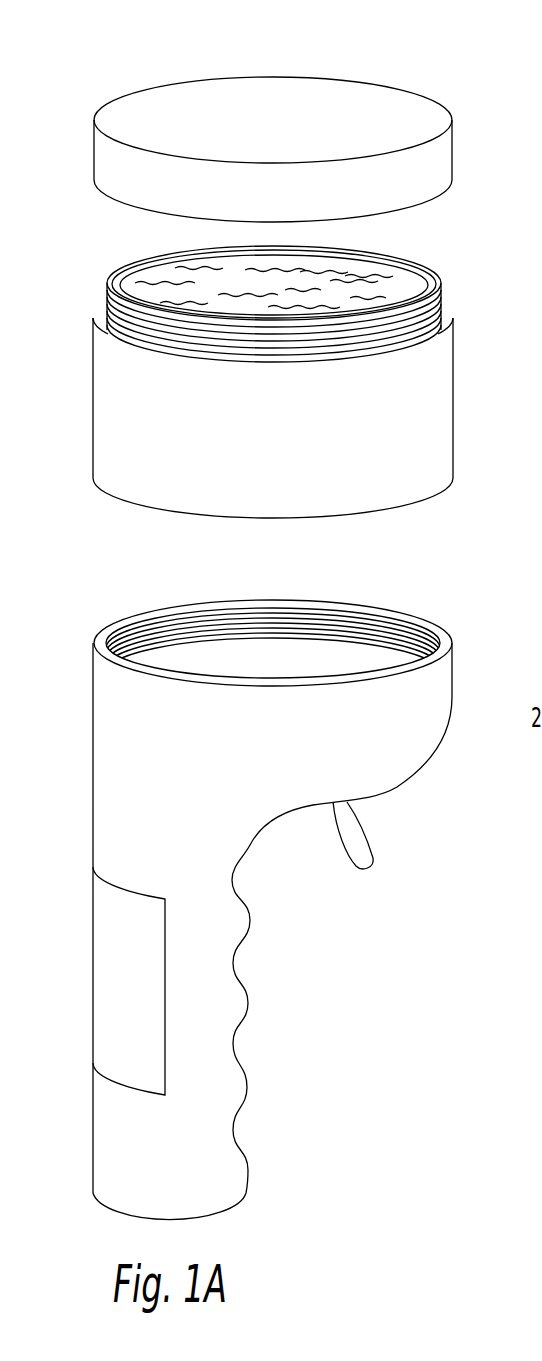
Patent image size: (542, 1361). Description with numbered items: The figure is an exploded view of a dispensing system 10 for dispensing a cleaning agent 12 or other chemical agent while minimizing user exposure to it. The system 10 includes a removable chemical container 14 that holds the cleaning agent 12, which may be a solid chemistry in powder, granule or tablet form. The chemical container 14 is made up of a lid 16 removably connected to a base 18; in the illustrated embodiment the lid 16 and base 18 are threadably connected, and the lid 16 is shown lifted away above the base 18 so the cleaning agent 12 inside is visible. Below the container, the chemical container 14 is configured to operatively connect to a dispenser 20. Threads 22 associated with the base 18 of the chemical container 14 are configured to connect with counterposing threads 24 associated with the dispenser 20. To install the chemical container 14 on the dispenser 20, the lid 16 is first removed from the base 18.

The dispensing system 10 is at (168, 22).
The cleaning agent 12 is at (203, 280).
The chemical container 14 is at (541, 167).
The lid 16 is at (413, 103).
The base 18 is at (448, 374).
The dispenser 20 is at (406, 551).
The threads 22 is at (104, 302).
The counterposing threads 24 is at (448, 640).